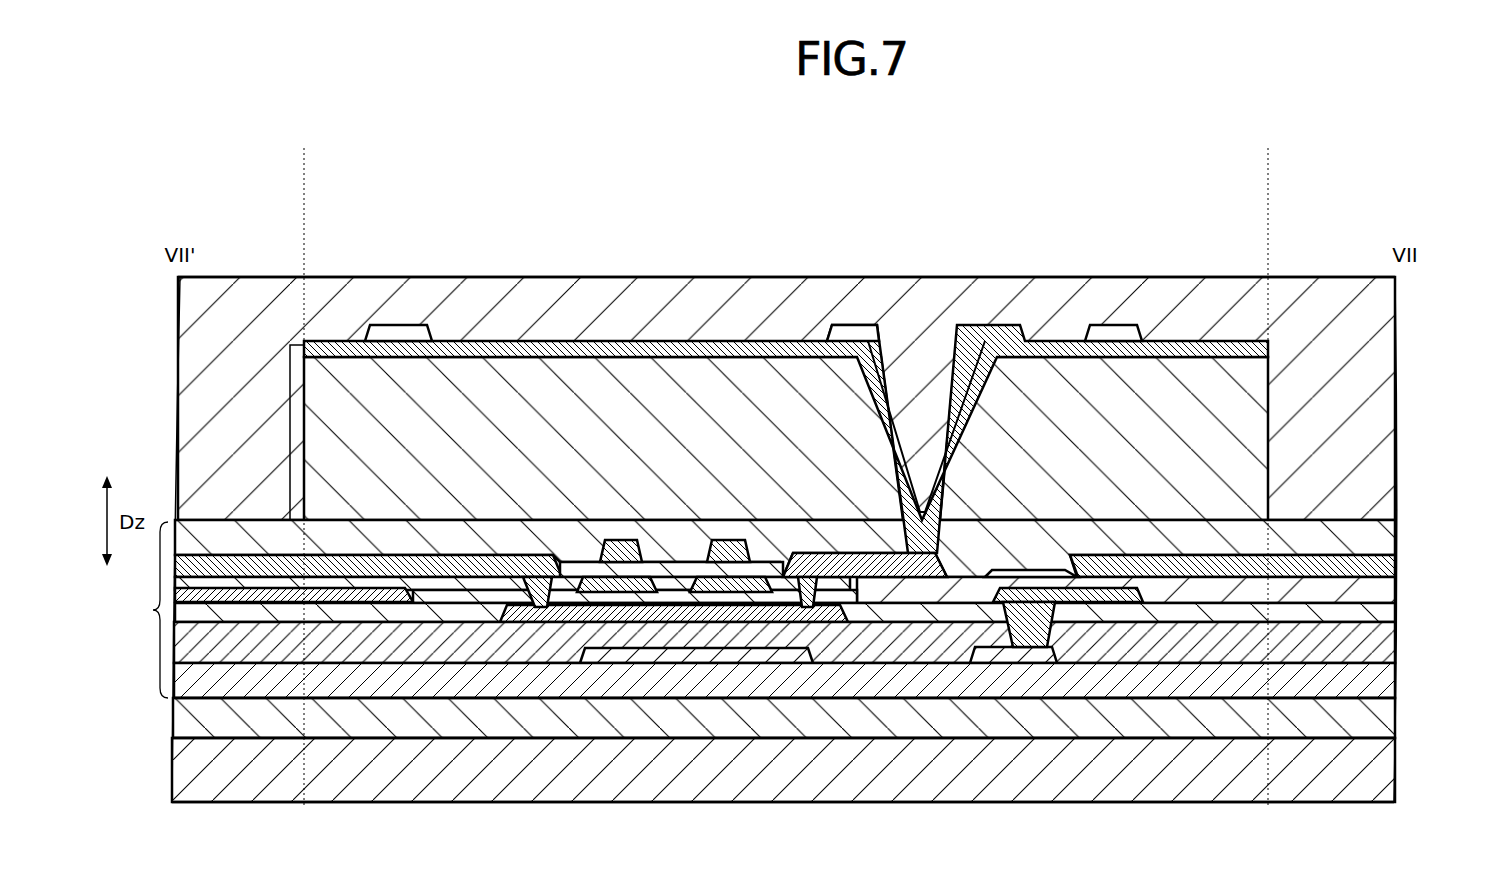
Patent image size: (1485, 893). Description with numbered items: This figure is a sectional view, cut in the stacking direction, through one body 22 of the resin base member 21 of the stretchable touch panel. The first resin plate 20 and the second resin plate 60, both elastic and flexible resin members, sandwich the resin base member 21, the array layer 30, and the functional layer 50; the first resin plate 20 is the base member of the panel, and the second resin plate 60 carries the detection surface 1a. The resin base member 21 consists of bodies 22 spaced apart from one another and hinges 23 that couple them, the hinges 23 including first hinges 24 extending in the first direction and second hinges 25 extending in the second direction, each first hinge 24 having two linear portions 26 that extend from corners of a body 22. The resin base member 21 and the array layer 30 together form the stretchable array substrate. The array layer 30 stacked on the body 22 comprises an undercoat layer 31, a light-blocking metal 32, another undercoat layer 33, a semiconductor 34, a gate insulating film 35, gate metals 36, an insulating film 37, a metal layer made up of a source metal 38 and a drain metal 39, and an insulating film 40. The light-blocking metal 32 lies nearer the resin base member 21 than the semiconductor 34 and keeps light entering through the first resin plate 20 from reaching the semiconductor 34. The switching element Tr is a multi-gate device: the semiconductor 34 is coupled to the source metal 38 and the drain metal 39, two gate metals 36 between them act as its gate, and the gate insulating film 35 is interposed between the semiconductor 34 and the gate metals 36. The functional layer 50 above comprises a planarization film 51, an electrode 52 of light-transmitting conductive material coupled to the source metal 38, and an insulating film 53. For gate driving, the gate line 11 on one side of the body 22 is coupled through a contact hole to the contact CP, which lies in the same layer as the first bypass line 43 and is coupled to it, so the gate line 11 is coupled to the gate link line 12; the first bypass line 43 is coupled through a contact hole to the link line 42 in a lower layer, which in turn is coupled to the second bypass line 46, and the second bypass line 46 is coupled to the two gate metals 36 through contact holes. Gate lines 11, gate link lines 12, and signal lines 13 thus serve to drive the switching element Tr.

The detection surface 1a is at (1188, 277).
The gate line 11 is at (1395, 566).
The gate link line 12 is at (272, 699).
The signal line 13 is at (440, 590).
The first resin plate 20 is at (1395, 765).
The resin base member 21 is at (1395, 718).
The body 22 is at (304, 173).
The hinge 23 is at (205, 728).
The first hinge 24 is at (1310, 728).
The second hinge 25 is at (176, 539).
The linear portion 26 is at (304, 173).
The array layer 30 is at (144, 610).
The undercoat layer 31 is at (1395, 680).
The light-blocking metal 32 is at (588, 660).
The undercoat layer 33 is at (1395, 645).
The semiconductor 34 is at (807, 598).
The gate insulating film 35 is at (1395, 613).
The gate metal 36 is at (628, 594).
The insulating film 37 is at (1395, 591).
The source metal 38 is at (850, 580).
The drain metal 39 is at (522, 612).
The insulating film 40 is at (1385, 542).
The link line 42 is at (1030, 600).
The first bypass line 43 is at (347, 600).
The second bypass line 46 is at (620, 540).
The functional layer 50 is at (290, 432).
The planarization film 51 is at (1257, 433).
The electrode 52 is at (1040, 335).
The insulating film 53 is at (879, 352).
The second resin plate 60 is at (1344, 293).
The switching element Tr is at (690, 624).
The contact CP is at (1085, 604).